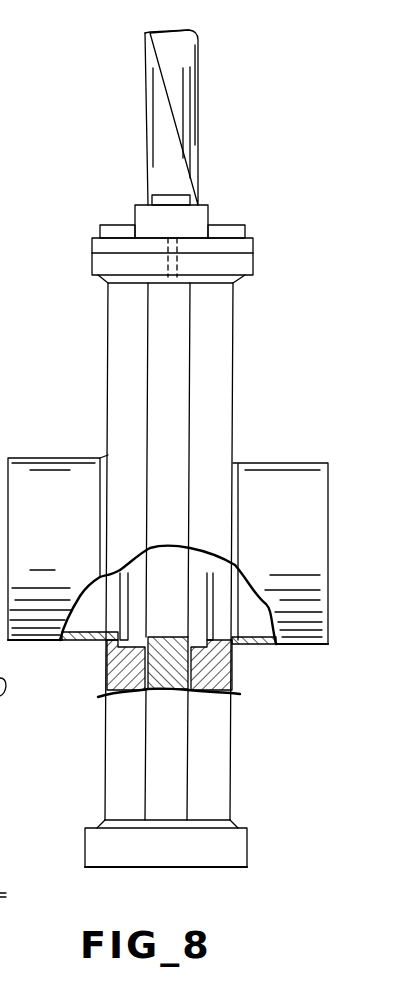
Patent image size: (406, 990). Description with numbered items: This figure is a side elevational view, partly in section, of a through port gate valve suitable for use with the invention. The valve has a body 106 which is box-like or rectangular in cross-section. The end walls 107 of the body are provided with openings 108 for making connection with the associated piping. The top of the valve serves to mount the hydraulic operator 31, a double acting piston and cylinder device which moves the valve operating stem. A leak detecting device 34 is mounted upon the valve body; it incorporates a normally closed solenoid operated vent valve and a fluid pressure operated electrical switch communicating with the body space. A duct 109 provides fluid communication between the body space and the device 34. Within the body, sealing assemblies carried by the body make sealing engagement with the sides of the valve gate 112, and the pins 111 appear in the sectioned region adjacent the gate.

The hydraulic operator 31 is at (198, 138).
The leak detecting device 34 is at (208, 205).
The duct 109 is at (187, 272).
The body 106 is at (232, 775).
The openings 108 is at (235, 593).
The end walls 107 is at (218, 677).
The valve gate 112 is at (168, 684).
The pins 111 is at (138, 578).